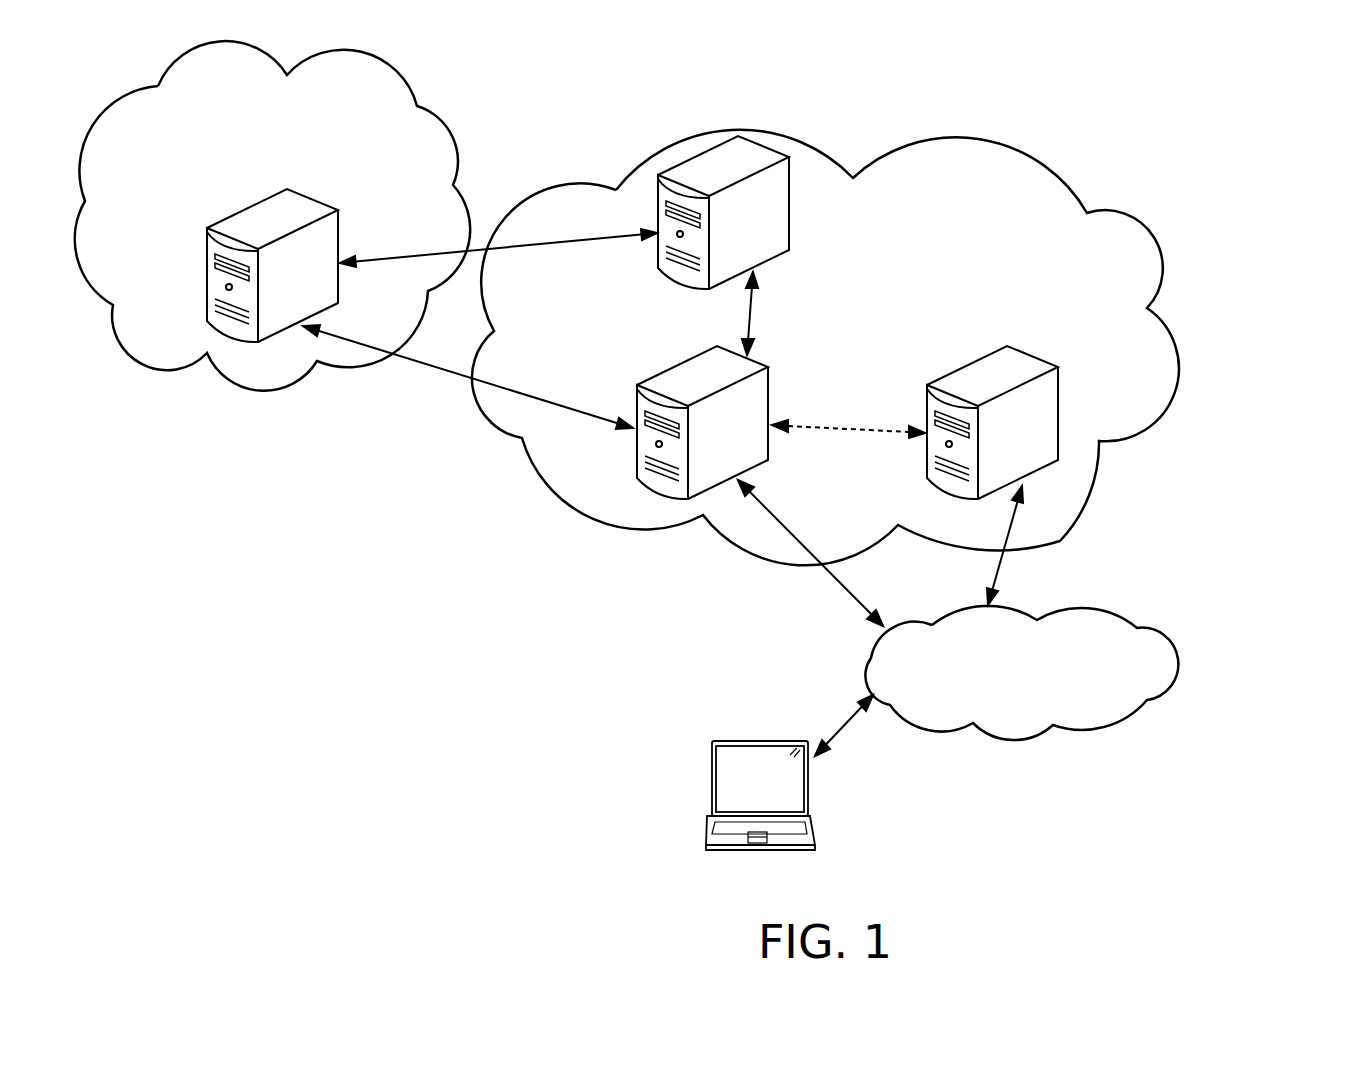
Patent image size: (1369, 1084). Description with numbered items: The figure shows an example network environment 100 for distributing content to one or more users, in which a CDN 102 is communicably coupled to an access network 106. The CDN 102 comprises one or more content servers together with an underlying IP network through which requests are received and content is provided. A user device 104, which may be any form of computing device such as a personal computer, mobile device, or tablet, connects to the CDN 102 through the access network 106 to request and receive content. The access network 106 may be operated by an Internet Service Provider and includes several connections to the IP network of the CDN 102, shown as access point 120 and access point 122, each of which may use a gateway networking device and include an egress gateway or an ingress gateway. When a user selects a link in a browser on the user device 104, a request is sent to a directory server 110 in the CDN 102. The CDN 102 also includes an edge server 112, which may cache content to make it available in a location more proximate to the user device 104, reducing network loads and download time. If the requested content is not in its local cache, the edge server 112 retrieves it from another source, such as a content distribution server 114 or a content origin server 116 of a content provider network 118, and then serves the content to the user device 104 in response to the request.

The network environment 100 is at (1240, 193).
The CDN 102 is at (825, 348).
The user device 104 is at (712, 815).
The access network 106 is at (1021, 673).
The directory server 110 is at (1058, 402).
The edge server 112 is at (677, 368).
The content distribution server 114 is at (790, 240).
The content origin server 116 is at (207, 276).
The content provider network 118 is at (272, 216).
The access point 120 is at (856, 602).
The access point 122 is at (998, 573).